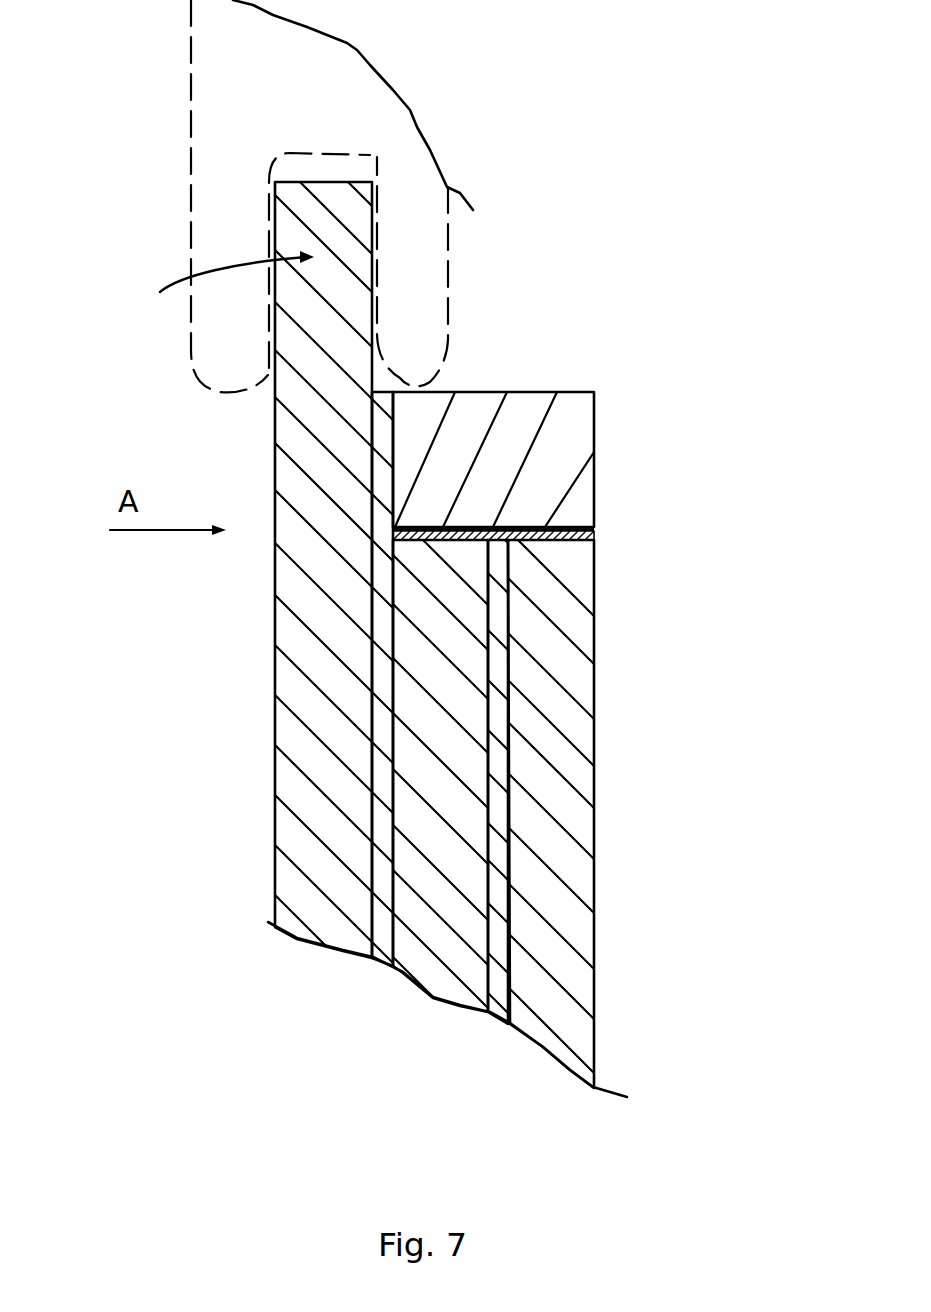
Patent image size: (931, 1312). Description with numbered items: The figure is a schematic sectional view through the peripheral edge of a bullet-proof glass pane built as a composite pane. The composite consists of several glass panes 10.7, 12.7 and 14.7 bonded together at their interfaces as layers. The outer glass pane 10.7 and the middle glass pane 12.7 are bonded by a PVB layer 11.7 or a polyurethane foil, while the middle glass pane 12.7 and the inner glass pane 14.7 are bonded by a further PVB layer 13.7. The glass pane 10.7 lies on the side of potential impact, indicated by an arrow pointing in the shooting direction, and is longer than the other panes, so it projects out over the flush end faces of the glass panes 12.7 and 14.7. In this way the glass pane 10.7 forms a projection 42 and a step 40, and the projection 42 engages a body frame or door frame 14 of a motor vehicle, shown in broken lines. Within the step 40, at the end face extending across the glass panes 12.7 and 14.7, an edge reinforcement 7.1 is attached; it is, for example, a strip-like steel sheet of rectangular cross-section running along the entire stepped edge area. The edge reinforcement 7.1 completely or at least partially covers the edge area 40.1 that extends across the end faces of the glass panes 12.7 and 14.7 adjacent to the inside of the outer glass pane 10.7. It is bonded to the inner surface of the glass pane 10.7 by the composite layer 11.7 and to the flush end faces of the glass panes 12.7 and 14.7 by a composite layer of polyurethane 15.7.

The body frame or door frame 14 is at (190, 147).
The projection 42 is at (222, 289).
The step 40 is at (489, 364).
The edge area 40.1 is at (576, 514).
The edge reinforcement 7.1 is at (575, 498).
The composite layer of polyurethane 15.7 is at (596, 536).
The glass pane 10.7 is at (283, 578).
The PVB layer 11.7 is at (380, 725).
The glass pane 12.7 is at (477, 623).
The PVB layer 13.7 is at (498, 710).
The glass pane 14.7 is at (582, 822).